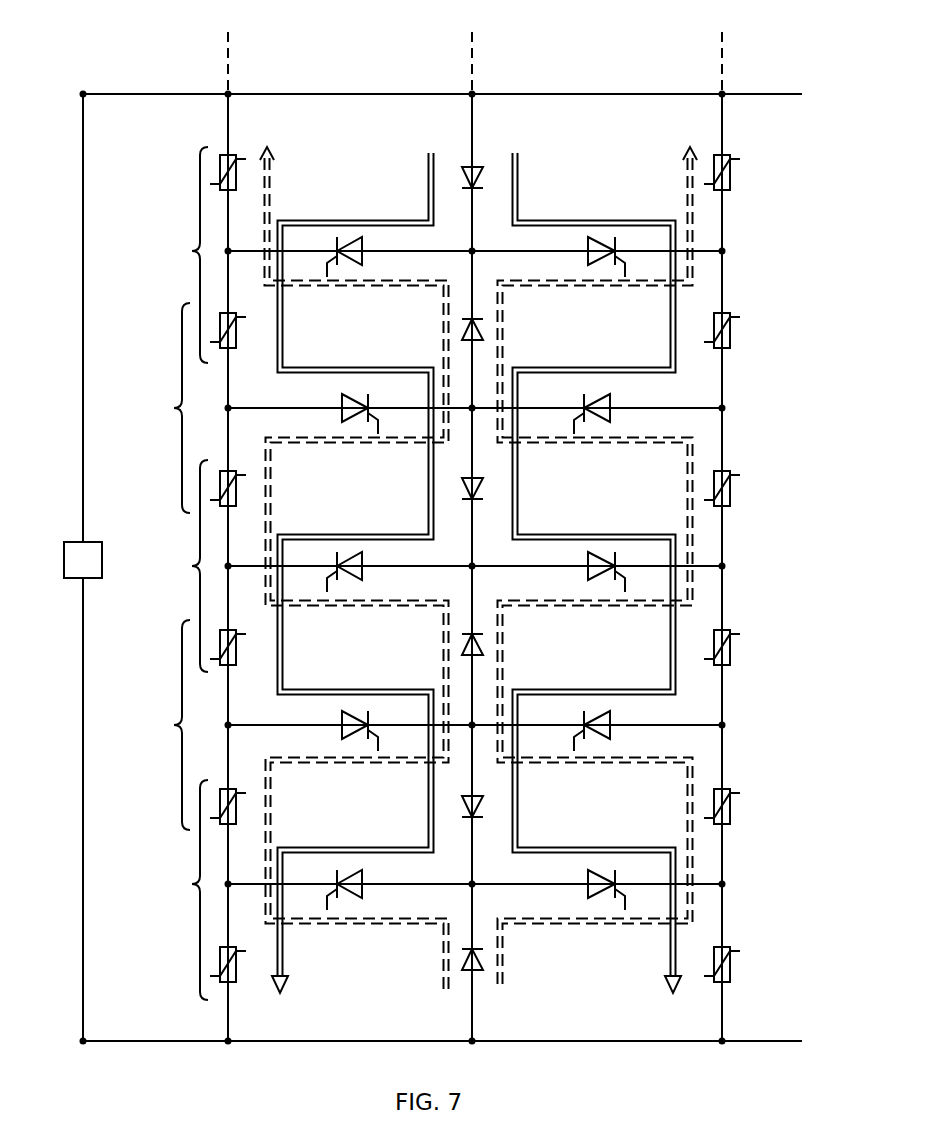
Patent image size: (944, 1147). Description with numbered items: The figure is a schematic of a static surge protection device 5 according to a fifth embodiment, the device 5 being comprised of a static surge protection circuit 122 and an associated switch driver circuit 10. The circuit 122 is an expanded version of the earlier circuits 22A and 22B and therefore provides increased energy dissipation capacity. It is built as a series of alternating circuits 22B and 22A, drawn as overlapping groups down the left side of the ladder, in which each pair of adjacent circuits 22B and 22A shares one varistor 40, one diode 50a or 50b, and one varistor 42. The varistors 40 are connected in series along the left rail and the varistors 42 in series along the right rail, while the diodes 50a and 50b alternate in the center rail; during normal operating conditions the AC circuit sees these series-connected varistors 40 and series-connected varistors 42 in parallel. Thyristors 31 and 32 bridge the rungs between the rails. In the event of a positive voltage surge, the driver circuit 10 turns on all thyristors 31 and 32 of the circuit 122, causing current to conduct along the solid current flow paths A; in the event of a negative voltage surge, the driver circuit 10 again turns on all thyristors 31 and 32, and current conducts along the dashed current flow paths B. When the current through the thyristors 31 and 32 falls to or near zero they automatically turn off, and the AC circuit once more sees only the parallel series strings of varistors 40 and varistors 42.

The static surge protection device 5 is at (132, 68).
The static surge protection circuit 122 is at (331, 75).
The switch driver circuit 10 is at (90, 572).
The circuit 22A is at (172, 408).
The circuit 22B is at (190, 251).
The thyristor 31 is at (358, 252).
The thyristor 32 is at (594, 252).
The varistor 40 is at (238, 177).
The varistor 42 is at (732, 176).
The diode 50a is at (478, 172).
The diode 50b is at (478, 326).
The current flow path A is at (365, 220).
The current flow path B is at (360, 290).